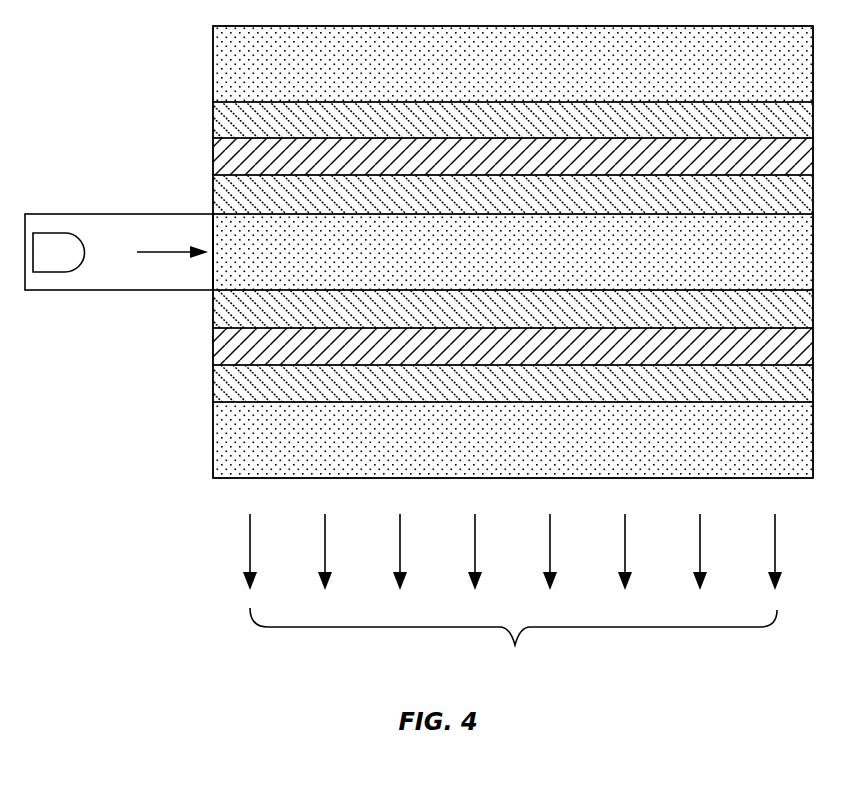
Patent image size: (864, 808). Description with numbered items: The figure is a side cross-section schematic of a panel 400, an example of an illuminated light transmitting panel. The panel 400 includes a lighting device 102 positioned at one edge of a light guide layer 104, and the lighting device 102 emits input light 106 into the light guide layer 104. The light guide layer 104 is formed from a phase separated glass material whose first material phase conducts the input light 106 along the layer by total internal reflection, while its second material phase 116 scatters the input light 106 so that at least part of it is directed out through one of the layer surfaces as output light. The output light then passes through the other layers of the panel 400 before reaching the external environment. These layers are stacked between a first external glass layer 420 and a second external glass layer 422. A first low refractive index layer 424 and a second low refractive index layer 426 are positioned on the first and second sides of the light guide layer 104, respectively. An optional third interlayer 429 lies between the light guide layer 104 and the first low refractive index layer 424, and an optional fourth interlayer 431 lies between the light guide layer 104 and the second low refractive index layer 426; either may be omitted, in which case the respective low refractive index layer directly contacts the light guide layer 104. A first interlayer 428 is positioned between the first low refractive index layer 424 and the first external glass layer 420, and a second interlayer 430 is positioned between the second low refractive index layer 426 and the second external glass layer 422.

The panel 400 is at (129, 57).
The lighting device 102 is at (55, 233).
The input light 106 is at (99, 261).
The light guide layer 104 is at (500, 262).
The first external glass layer 420 is at (500, 74).
The second external glass layer 422 is at (500, 450).
The first low refractive index layer 424 is at (500, 167).
The second low refractive index layer 426 is at (500, 356).
The first interlayer 428 is at (500, 130).
The third interlayer 429 is at (500, 204).
The second interlayer 430 is at (500, 393).
The fourth interlayer 431 is at (500, 319).
The second material phase 116 is at (498, 675).